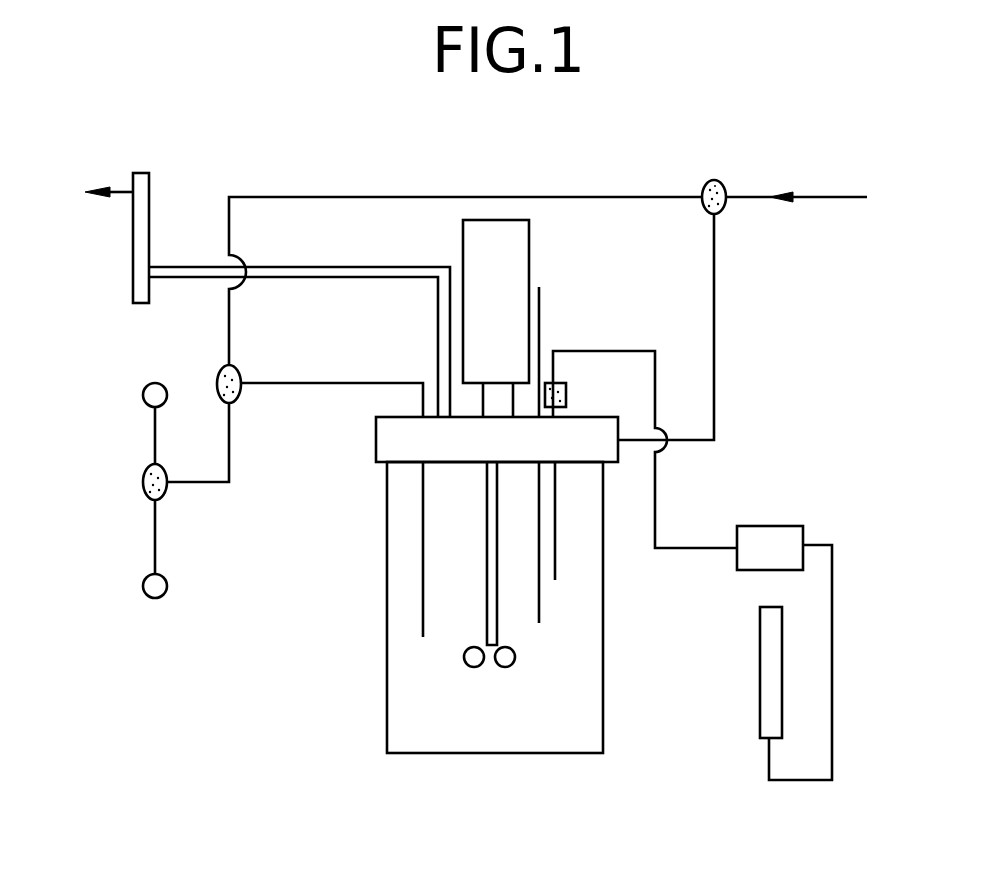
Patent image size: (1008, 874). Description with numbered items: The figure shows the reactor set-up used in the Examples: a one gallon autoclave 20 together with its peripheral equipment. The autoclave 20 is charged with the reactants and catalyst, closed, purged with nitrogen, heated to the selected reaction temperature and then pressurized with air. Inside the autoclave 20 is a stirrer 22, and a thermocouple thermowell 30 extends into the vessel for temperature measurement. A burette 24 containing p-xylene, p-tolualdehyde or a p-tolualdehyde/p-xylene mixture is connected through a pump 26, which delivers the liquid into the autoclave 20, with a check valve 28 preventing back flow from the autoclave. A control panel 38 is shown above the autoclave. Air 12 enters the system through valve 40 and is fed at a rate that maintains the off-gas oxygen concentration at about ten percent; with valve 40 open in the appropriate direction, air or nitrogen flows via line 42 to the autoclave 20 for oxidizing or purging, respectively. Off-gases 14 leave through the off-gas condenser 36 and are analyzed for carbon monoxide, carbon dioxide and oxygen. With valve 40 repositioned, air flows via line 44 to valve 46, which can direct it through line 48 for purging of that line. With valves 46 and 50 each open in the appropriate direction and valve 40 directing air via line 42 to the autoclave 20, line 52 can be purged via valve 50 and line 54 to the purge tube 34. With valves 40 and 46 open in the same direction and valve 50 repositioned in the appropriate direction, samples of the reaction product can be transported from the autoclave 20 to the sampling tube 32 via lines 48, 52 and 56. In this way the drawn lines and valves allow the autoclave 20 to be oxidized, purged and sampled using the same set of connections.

The air 12 is at (817, 194).
The off-gases 14 is at (90, 187).
The autoclave 20 is at (387, 600).
The stirrer 22 is at (447, 658).
The burette 24 is at (760, 675).
The pump 26 is at (772, 527).
The check valve 28 is at (567, 394).
The thermocouple thermowell 30 is at (540, 308).
The sampling tube 32 is at (145, 589).
The purge tube 34 is at (143, 393).
The off-gas condenser 36 is at (150, 187).
The control panel 38 is at (530, 245).
The valve 40 is at (717, 179).
The line 42 is at (716, 326).
The line 44 is at (463, 197).
The valve 46 is at (216, 384).
The line 48 is at (301, 383).
The valve 50 is at (145, 488).
The line 52 is at (231, 453).
The line 54 is at (155, 438).
The line 56 is at (158, 548).